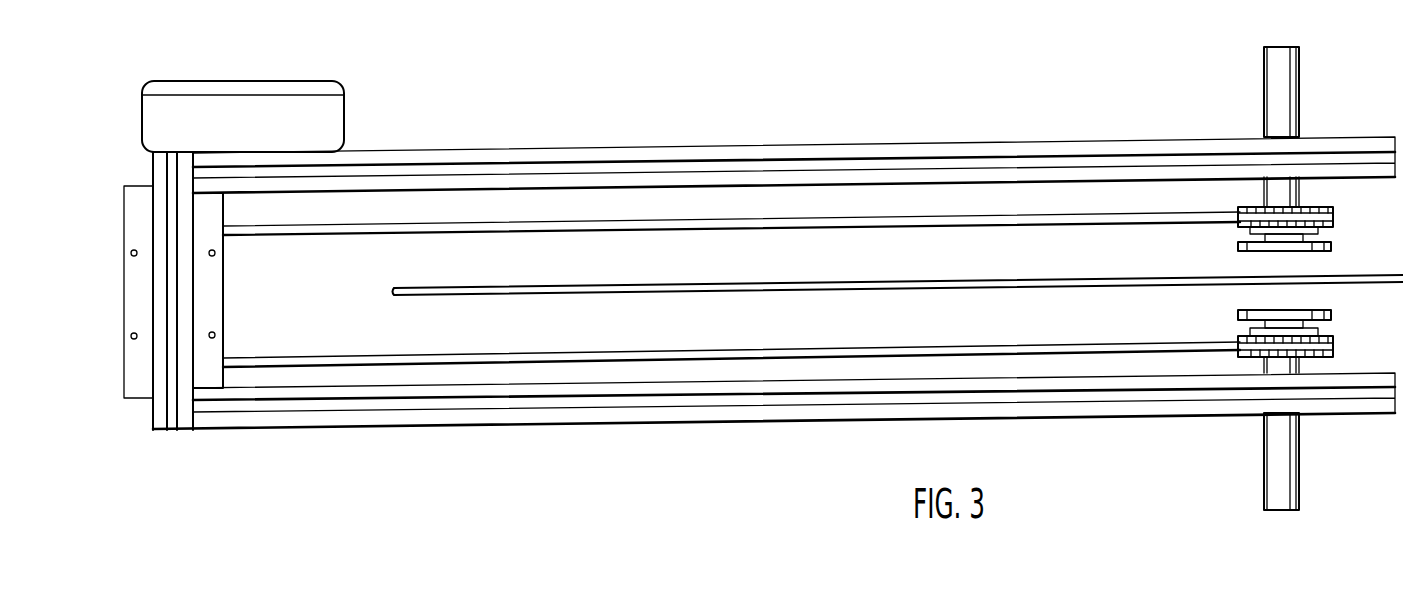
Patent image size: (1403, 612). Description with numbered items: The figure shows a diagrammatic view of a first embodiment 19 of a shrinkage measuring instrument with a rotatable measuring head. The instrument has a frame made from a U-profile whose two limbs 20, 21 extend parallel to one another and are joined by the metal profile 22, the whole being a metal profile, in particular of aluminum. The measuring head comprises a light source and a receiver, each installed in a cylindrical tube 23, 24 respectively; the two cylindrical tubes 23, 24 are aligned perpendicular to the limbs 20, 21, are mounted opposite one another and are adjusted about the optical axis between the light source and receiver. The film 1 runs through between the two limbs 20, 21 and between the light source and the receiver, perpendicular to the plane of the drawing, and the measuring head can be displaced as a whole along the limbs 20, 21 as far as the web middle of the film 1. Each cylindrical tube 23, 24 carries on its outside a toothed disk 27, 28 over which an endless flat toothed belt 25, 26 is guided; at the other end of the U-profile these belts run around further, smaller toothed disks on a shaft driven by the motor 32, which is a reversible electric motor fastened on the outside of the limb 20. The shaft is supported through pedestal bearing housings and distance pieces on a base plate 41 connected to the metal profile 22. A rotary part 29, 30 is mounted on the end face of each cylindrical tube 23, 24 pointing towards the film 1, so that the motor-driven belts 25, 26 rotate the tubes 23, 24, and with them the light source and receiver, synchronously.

The film 1 is at (892, 286).
The first embodiment of the shrinkage measuring instrument 19 is at (877, 120).
The limb of the U-profile 20 is at (630, 157).
The limb of the U-profile 21 is at (528, 413).
The metal profile 22 is at (185, 423).
The cylindrical tube 23 is at (1295, 77).
The cylindrical tube 24 is at (1295, 487).
The endless flat toothed belt 25 is at (780, 227).
The endless flat toothed belt 26 is at (713, 350).
The toothed disk 27 is at (1252, 207).
The toothed disk 28 is at (1245, 357).
The rotary part 29 is at (1331, 243).
The rotary part 30 is at (1331, 313).
The motor 32 is at (338, 107).
The base plate 41 is at (213, 300).